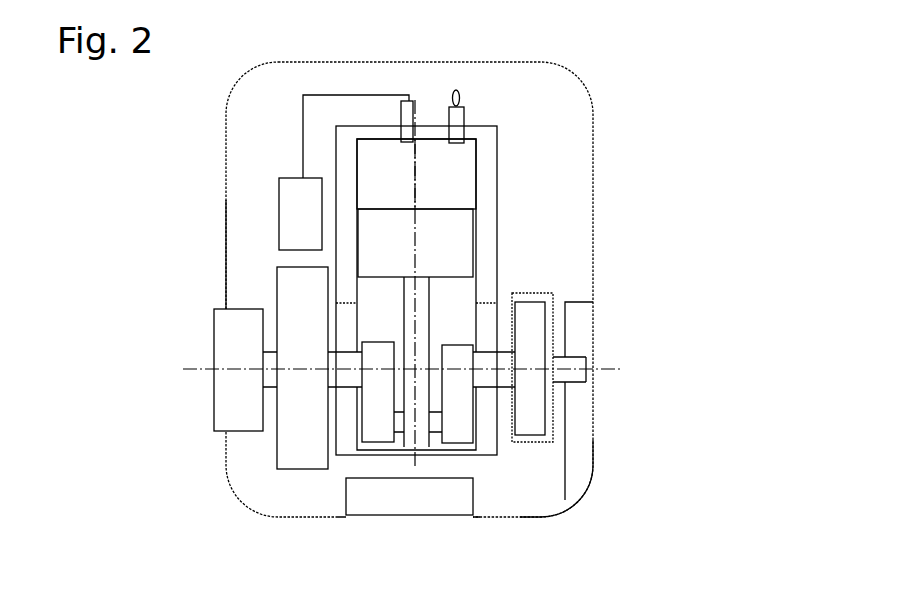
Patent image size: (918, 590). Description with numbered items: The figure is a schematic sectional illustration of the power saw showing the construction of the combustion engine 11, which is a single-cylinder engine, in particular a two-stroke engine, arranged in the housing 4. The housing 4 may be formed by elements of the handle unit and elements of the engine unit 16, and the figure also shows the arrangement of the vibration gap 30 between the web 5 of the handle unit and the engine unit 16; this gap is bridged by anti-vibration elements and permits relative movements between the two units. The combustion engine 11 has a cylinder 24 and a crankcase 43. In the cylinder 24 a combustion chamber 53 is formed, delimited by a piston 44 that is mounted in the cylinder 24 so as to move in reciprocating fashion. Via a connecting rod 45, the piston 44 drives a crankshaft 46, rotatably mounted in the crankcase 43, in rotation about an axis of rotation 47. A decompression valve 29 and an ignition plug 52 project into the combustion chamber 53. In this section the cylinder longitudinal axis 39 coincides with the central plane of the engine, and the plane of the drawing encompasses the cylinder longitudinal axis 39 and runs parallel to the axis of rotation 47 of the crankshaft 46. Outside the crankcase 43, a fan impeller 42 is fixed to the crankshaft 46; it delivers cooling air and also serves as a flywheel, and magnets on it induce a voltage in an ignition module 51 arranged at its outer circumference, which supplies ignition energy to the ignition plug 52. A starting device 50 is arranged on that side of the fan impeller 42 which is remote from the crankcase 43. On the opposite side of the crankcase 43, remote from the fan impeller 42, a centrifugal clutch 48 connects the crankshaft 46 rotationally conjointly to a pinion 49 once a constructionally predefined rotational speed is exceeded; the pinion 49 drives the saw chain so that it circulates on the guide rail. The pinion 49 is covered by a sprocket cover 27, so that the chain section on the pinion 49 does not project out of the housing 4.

The housing 4 is at (575, 77).
The web 5 is at (425, 502).
The combustion engine 11 is at (493, 110).
The engine unit 16 is at (223, 192).
The cylinder 24 is at (482, 200).
The sprocket cover 27 is at (588, 480).
The decompression valve 29 is at (458, 117).
The vibration gap 30 is at (343, 518).
The cylinder longitudinal axis 39 is at (416, 181).
The fan impeller 42 is at (297, 445).
The crankcase 43 is at (488, 443).
The piston 44 is at (456, 248).
The connecting rod 45 is at (422, 303).
The crankshaft 46 is at (347, 378).
The axis of rotation 47 is at (603, 368).
The centrifugal clutch 48 is at (540, 450).
The pinion 49 is at (575, 383).
The starting device 50 is at (227, 397).
The ignition module 51 is at (292, 197).
The ignition plug 52 is at (403, 130).
The combustion chamber 53 is at (370, 160).